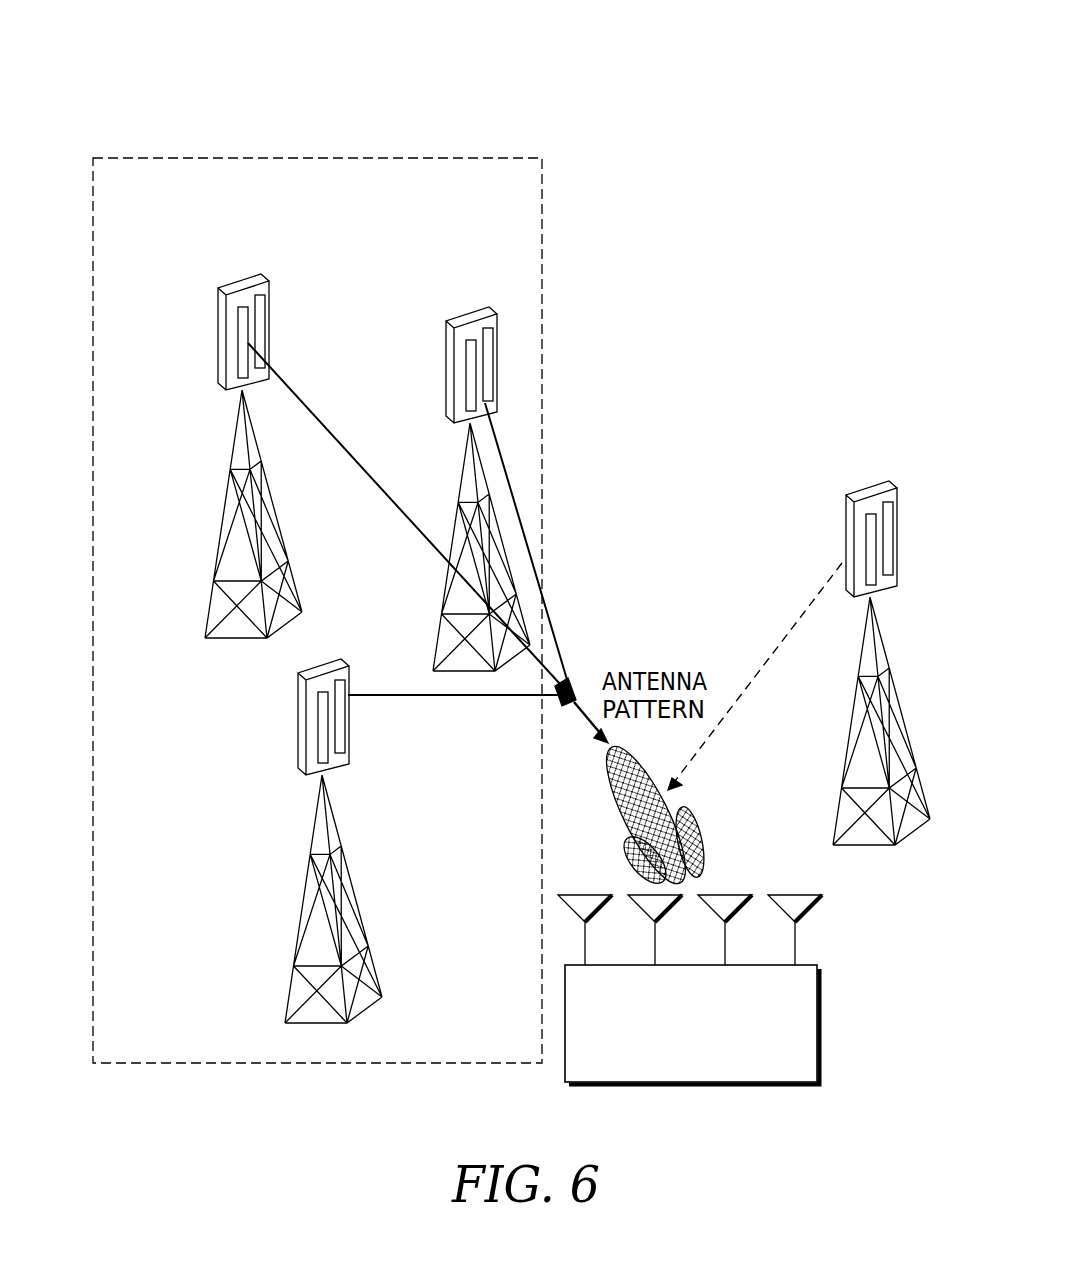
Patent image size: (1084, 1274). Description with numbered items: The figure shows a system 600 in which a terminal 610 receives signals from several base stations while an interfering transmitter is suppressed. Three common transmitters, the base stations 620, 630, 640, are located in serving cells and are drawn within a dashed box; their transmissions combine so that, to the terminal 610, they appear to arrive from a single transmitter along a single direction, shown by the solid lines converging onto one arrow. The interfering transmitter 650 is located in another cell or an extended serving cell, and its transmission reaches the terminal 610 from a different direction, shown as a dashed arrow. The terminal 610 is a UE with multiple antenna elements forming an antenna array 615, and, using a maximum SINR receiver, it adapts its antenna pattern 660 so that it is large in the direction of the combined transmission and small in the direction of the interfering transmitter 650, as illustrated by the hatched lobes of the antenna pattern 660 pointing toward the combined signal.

The system 600 is at (113, 44).
The terminal 610 is at (819, 1026).
The antenna array 615 is at (783, 937).
The base station 620 is at (217, 307).
The base station 630 is at (298, 722).
The base station 640 is at (447, 338).
The interfering transmitter 650 is at (888, 661).
The antenna pattern 660 is at (698, 833).